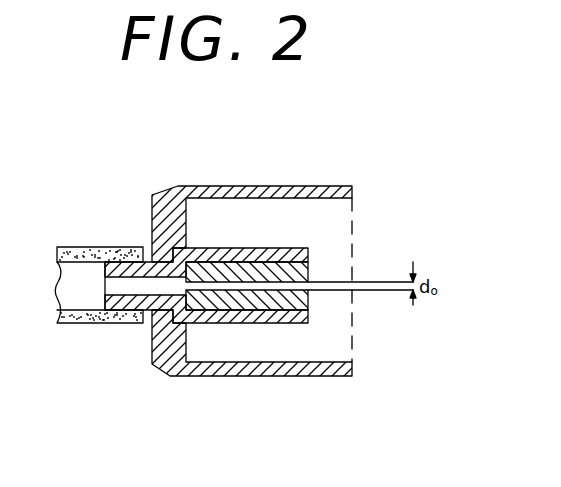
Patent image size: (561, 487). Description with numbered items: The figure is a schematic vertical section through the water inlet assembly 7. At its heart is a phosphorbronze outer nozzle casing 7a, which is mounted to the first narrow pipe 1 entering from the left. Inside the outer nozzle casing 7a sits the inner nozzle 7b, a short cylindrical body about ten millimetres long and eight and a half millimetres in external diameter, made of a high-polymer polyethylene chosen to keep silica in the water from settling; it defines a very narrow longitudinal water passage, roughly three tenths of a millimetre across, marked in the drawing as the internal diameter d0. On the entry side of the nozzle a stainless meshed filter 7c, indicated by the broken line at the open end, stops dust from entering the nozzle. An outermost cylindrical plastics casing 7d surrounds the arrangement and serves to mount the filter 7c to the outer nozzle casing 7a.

The first narrow pipe 1 is at (87, 318).
The water inlet assembly 7 is at (295, 173).
The outer nozzle casing 7a is at (217, 260).
The inner nozzle 7b is at (308, 307).
The meshed filter 7c is at (352, 238).
The outermost cylindrical plastics casing 7d is at (172, 362).